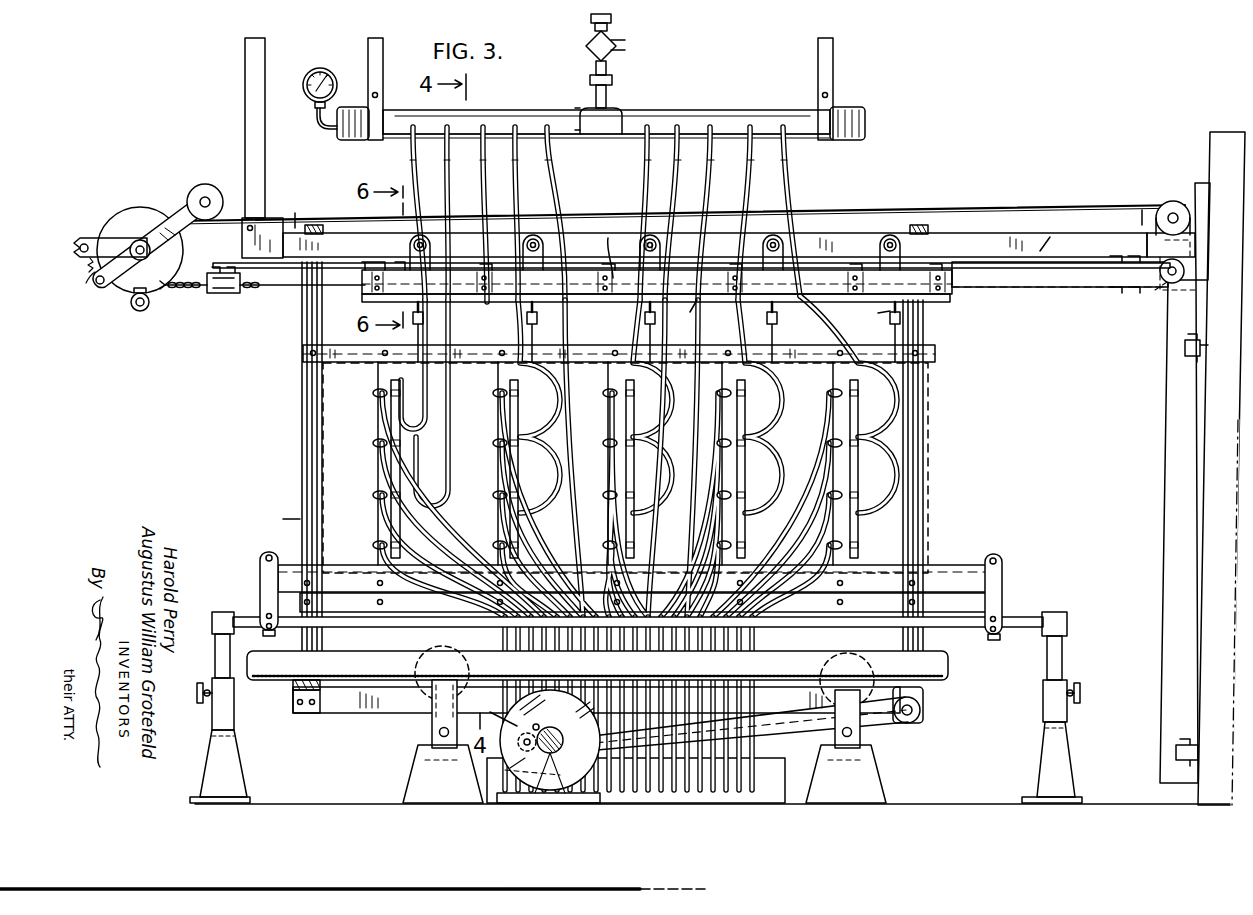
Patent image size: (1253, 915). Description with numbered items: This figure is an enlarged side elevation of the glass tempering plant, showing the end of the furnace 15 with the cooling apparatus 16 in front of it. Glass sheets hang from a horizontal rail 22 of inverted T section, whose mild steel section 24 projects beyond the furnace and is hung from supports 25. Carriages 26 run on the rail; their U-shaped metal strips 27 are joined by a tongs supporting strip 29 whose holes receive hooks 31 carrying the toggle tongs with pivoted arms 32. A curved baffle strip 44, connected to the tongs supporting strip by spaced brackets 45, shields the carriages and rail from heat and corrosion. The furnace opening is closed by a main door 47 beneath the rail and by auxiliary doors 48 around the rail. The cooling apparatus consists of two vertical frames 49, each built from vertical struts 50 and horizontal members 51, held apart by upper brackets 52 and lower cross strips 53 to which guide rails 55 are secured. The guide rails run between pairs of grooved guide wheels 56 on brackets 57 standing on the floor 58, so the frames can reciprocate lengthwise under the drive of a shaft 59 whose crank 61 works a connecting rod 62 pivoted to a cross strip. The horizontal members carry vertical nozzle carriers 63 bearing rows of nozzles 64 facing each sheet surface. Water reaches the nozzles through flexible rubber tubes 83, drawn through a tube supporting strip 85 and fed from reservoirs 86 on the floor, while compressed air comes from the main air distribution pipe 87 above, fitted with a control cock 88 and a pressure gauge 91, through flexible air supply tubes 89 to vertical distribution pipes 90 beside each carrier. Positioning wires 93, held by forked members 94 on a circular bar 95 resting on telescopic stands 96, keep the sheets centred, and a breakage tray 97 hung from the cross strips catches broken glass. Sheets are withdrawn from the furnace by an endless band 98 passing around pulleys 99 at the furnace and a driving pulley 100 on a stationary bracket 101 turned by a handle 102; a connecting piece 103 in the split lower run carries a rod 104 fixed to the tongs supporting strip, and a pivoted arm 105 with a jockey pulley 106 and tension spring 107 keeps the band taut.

The furnace 15 is at (1221, 468).
The cooling apparatus 16 is at (278, 519).
The horizontal rail 22 is at (811, 249).
The rail section 24 is at (1055, 231).
The supports 25 is at (245, 111).
The carriages 26 is at (463, 293).
The metal strips 27 is at (410, 247).
The tongs supporting strip 29 is at (607, 245).
The hooks 31 is at (870, 320).
The arms 32 is at (770, 335).
The baffle strip 44 is at (690, 317).
The brackets 45 is at (483, 276).
The main door 47 is at (1172, 479).
The auxiliary doors 48 is at (1197, 237).
The vertical frames 49 is at (304, 391).
The vertical struts 50 is at (300, 471).
The horizontal members 51 is at (573, 352).
The brackets 52 is at (312, 224).
The cross strips 53 is at (300, 683).
The guide rails 55 is at (372, 705).
The guide wheels 56 is at (470, 668).
The brackets 57 is at (428, 778).
The floor 58 is at (319, 803).
The driving shaft 59 is at (549, 728).
The crank 61 is at (493, 709).
The connecting rod 62 is at (780, 726).
The nozzle carriers 63 is at (378, 470).
The nozzles 64 is at (376, 442).
The flexible rubber tubes 83 is at (445, 530).
The tube supporting strip 85 is at (378, 603).
The liquid supply reservoirs 86 is at (636, 710).
The main air distribution pipe 87 is at (735, 110).
The main air control cock 88 is at (617, 45).
The flexible air supply tubes 89 is at (413, 154).
The vertical distribution pipes 90 is at (520, 443).
The pressure gauge 91 is at (321, 68).
The positioning wires 93 is at (655, 562).
The forked members 94 is at (266, 594).
The circular bar 95 is at (447, 627).
The telescopic stand 96 is at (237, 733).
The breakage tray 97 is at (597, 665).
The endless horizontal band 98 is at (947, 208).
The pulleys 99 is at (1173, 202).
The driving pulley 100 is at (136, 218).
The stationary bracket 101 is at (92, 240).
The handle 102 is at (133, 306).
The connecting piece 103 is at (225, 294).
The rod 104 is at (288, 270).
The arm 105 is at (183, 210).
The jockey pulley 106 is at (205, 185).
The tension spring 107 is at (94, 284).